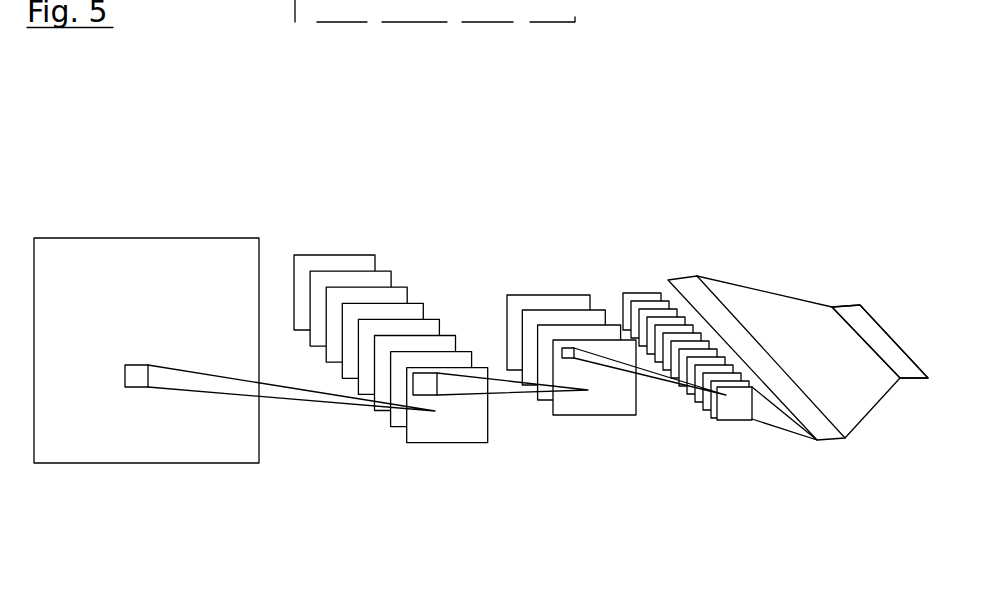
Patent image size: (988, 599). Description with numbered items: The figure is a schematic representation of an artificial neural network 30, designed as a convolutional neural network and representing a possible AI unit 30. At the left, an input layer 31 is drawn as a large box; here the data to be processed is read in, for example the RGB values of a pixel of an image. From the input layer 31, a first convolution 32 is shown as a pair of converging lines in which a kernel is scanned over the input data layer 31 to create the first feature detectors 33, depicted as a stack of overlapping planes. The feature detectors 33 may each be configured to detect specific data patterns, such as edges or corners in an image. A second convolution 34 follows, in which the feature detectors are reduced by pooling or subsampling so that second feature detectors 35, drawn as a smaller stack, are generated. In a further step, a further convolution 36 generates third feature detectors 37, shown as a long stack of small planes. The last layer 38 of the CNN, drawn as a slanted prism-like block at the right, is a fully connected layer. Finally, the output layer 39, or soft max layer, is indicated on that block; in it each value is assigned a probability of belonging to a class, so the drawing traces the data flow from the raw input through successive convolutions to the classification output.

The artificial neural network 30 is at (224, 160).
The input layer 31 is at (146, 350).
The first convolution 32 is at (294, 440).
The first feature detectors 33 is at (337, 230).
The second convolution 34 is at (507, 420).
The second feature detectors 35 is at (548, 270).
The further convolution 36 is at (649, 422).
The third feature detectors 37 is at (640, 270).
The last layer 38 is at (832, 462).
The output layer 39 is at (847, 282).